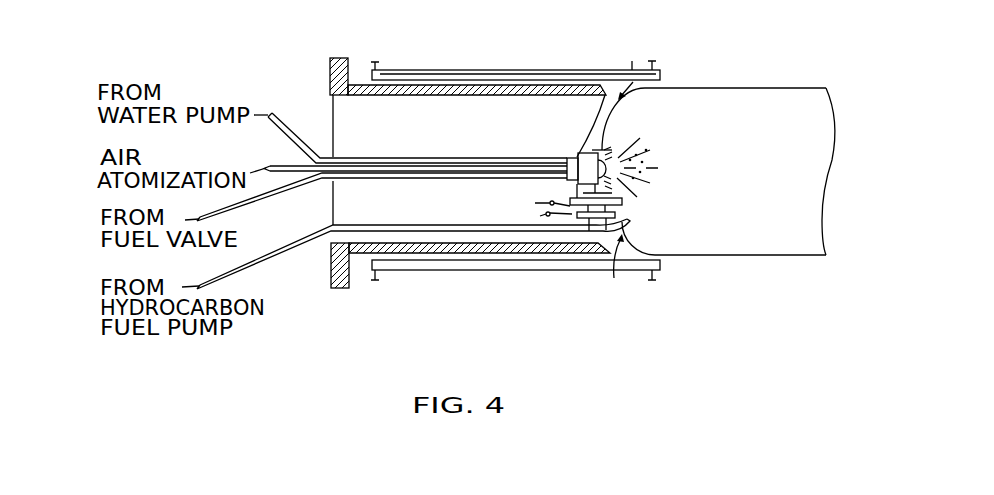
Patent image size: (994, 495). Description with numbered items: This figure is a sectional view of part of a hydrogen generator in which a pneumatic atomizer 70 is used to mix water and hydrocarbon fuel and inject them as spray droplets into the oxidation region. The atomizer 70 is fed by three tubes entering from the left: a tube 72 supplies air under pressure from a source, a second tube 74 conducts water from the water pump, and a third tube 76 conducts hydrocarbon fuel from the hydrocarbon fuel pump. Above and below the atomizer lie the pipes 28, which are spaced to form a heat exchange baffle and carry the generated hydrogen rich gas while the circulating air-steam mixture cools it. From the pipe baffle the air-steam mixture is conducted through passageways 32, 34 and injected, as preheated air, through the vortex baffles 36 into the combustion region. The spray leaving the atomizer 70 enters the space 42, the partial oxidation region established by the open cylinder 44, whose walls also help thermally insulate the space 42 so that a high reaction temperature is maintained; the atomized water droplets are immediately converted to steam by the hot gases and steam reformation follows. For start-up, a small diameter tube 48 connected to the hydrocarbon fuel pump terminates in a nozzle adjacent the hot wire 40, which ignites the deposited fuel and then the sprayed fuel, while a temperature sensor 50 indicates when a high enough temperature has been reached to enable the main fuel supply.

The pipes 28 is at (561, 69).
The passageway 32 is at (597, 113).
The passageway 34 is at (568, 198).
The vortex baffles 36 is at (627, 143).
The hot wire 40 is at (623, 203).
The space 42 is at (793, 175).
The open cylinder 44 is at (762, 87).
The small diameter tube 48 is at (414, 225).
The temperature sensor 50 is at (626, 208).
The pneumatic atomizer 70 is at (560, 157).
The tube 72 is at (275, 165).
The second tube 74 is at (312, 152).
The third tube 76 is at (374, 184).